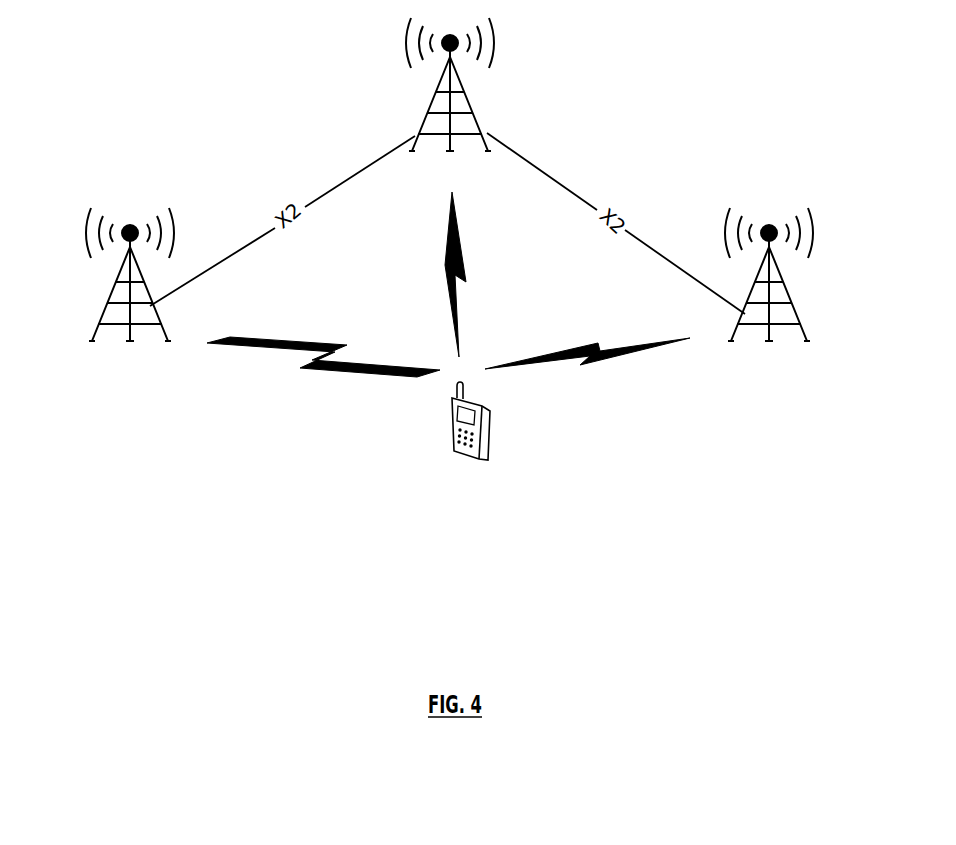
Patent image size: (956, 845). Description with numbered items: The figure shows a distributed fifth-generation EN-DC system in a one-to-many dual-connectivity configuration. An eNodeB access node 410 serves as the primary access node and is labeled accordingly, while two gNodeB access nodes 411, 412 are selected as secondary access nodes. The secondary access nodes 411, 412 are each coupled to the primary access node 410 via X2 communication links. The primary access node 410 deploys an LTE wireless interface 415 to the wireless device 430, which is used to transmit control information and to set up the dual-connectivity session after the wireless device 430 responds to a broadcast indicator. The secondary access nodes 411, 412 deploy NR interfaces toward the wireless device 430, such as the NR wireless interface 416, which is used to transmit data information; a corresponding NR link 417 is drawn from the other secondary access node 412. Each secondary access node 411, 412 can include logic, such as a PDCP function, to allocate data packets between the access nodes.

The eNodeB access node 410 is at (433, 117).
The gNodeB access node 411 is at (105, 323).
The gNodeB access node 412 is at (795, 318).
The wireless interface 415 is at (446, 278).
The 5G wireless interface 416 is at (321, 397).
The communication link between secondary base station 412 and UE 417 is at (594, 364).
The wireless device 430 is at (457, 452).